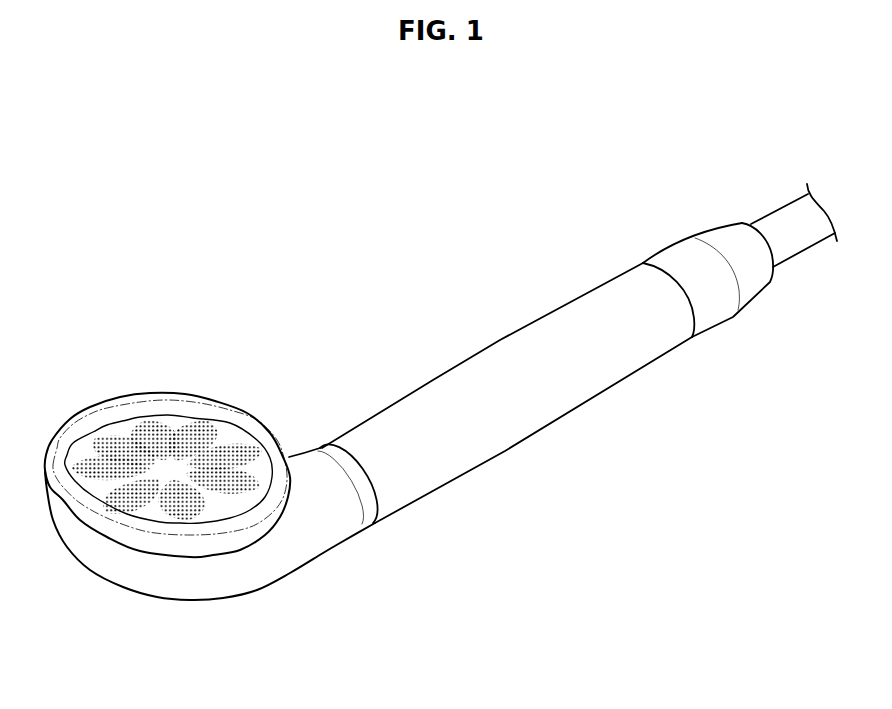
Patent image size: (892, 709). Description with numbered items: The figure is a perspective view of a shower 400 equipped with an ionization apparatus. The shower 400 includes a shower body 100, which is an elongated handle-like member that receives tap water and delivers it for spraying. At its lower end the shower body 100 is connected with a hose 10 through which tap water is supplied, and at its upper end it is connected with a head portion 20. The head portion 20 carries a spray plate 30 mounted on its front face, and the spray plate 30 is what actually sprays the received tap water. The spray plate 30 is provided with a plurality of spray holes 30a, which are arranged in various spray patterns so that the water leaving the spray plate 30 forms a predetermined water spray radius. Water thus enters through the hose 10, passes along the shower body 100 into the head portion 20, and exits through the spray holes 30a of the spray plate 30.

The shower 400 is at (553, 120).
The shower body 100 is at (535, 312).
The hose 10 is at (728, 239).
The head portion 20 is at (200, 586).
The spray plate 30 is at (217, 437).
The spray holes 30a is at (163, 430).